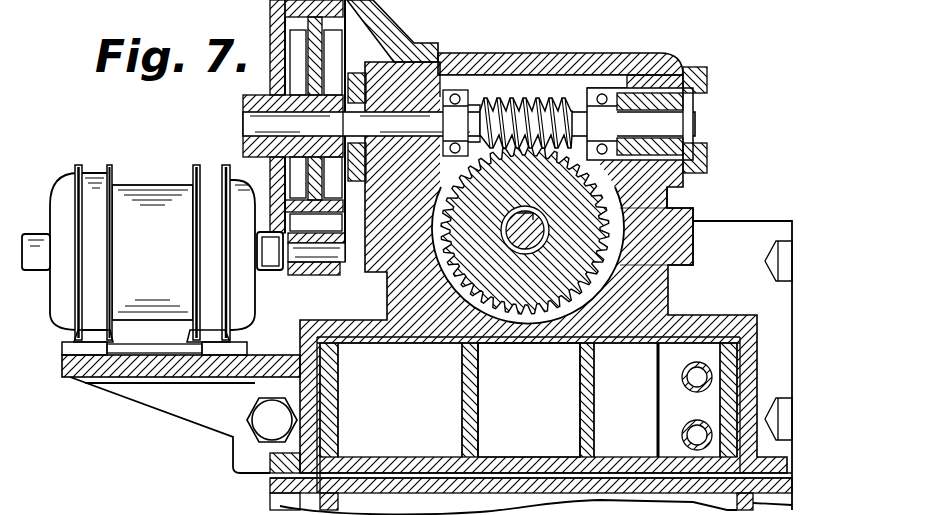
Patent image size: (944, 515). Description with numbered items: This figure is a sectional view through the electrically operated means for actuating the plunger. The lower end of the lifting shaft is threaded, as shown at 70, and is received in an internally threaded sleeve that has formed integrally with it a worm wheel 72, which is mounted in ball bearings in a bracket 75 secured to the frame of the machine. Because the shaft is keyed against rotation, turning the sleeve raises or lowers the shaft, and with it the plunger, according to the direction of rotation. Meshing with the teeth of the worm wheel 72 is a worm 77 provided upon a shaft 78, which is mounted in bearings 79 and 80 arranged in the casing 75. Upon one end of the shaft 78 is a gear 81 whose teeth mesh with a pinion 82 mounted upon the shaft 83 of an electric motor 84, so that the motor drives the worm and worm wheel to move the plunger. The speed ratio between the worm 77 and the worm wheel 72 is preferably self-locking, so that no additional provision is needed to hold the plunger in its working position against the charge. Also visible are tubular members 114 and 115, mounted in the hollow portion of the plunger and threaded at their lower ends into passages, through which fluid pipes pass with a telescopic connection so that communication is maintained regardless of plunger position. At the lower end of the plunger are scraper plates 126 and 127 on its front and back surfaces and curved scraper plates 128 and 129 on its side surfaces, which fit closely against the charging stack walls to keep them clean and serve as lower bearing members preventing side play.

The threaded lower end of shaft 70 is at (693, 240).
The worm wheel 72 is at (668, 203).
The bracket 75 is at (617, 63).
The worm 77 is at (545, 92).
The worm shaft 78 is at (430, 118).
The bearing 79 is at (647, 92).
The bearing 80 is at (412, 75).
The gear 81 is at (317, 57).
The pinion 82 is at (312, 270).
The motor shaft 83 is at (336, 252).
The electric motor 84 is at (150, 195).
The tubular member 114 is at (682, 370).
The tubular member 115 is at (683, 432).
The scraper plate 126 is at (535, 477).
The scraper plate 127 is at (540, 340).
The curved scraper plate 128 is at (320, 423).
The curved scraper plate 129 is at (738, 405).